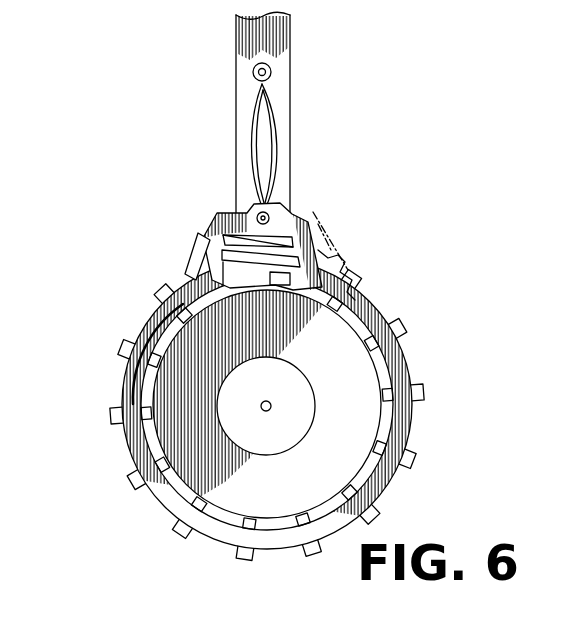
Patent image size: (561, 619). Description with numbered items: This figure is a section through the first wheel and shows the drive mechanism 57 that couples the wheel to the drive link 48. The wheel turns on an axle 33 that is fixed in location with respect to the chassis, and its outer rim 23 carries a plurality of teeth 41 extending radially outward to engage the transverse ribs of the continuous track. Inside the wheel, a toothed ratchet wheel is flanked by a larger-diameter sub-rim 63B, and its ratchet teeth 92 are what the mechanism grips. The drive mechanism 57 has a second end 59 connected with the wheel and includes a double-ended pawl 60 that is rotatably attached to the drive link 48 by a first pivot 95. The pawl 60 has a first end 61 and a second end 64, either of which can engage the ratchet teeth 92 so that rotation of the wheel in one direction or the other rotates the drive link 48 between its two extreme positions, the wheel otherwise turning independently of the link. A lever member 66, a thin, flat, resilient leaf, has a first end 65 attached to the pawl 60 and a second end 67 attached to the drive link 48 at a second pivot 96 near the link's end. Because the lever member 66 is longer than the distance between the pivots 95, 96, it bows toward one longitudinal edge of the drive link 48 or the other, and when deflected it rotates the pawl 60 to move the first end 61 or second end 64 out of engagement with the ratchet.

The outer rim 23 is at (261, 406).
The axle 33 is at (272, 408).
The teeth 41 is at (121, 350).
The drive link 48 is at (243, 47).
The drive mechanism 57 is at (255, 156).
The second end 59 is at (352, 300).
The pawl 60 is at (239, 233).
The first end 61 is at (190, 265).
The sub-rim 63B is at (413, 400).
The second end 64 is at (313, 262).
The first end 65 is at (268, 200).
The lever member 66 is at (275, 123).
The second end 67 is at (262, 95).
The teeth 92 is at (143, 370).
The first pivot 95 is at (270, 217).
The second pivot 96 is at (271, 72).